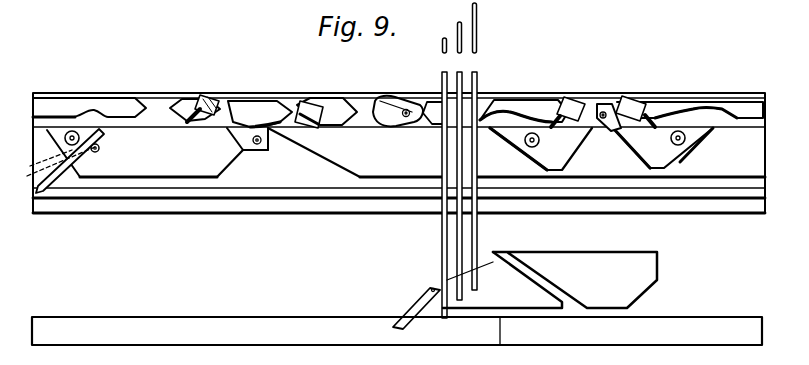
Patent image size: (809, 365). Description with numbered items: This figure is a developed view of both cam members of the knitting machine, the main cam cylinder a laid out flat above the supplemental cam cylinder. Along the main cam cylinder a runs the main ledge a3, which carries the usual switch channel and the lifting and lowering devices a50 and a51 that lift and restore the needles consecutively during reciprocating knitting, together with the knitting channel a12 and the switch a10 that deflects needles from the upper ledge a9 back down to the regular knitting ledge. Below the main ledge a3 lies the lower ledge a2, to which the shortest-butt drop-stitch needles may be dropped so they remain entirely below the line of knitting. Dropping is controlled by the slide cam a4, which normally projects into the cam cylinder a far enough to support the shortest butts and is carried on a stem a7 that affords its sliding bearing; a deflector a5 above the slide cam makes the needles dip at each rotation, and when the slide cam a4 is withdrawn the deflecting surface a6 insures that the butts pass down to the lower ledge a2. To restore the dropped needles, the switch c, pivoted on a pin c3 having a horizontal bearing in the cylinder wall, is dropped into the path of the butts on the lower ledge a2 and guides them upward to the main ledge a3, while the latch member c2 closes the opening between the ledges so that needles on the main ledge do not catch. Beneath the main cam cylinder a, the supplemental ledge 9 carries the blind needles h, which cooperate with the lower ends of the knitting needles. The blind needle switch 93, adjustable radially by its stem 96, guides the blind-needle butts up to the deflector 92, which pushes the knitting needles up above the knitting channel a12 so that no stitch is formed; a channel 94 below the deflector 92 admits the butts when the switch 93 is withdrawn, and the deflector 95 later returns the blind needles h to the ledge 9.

The main cam cylinder a is at (57, 97).
The lower ledge a2 is at (337, 188).
The main ledge a3 is at (357, 125).
The slide cam a4 is at (265, 152).
The deflector a5 is at (264, 100).
The deflecting surface a6 is at (406, 154).
The stem a7 is at (253, 141).
The upper ledge a9 is at (523, 100).
The switch a10 is at (397, 97).
The knitting channel a12 is at (604, 110).
The lifting device a50 is at (634, 104).
The lowering device a51 is at (211, 98).
The switch c is at (50, 187).
The latch member c2 is at (97, 130).
The pivot pin c3 is at (100, 148).
The blind needles h is at (473, 248).
The supplemental ledge 9 is at (397, 331).
The deflector 92 is at (502, 280).
The blind needle switch 93 is at (418, 300).
The channel 94 is at (505, 318).
The deflector 95 is at (575, 280).
The stem 96 is at (431, 289).